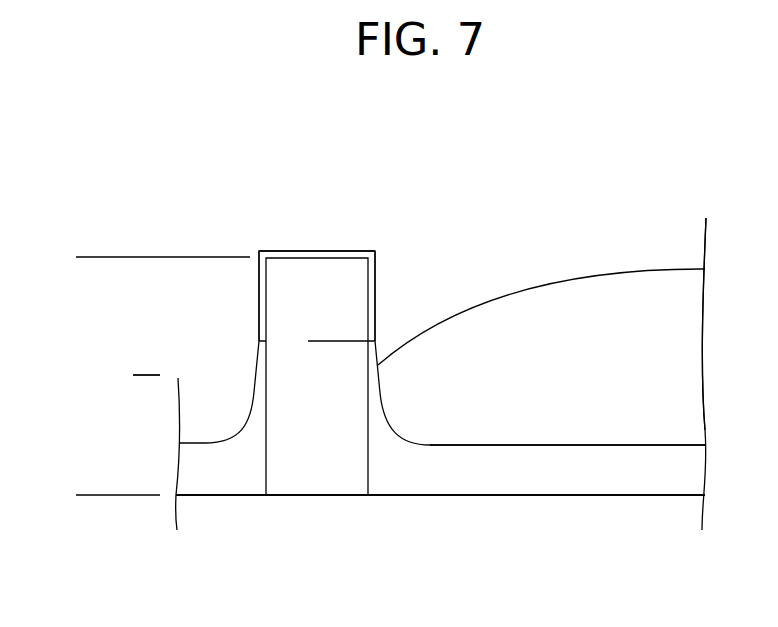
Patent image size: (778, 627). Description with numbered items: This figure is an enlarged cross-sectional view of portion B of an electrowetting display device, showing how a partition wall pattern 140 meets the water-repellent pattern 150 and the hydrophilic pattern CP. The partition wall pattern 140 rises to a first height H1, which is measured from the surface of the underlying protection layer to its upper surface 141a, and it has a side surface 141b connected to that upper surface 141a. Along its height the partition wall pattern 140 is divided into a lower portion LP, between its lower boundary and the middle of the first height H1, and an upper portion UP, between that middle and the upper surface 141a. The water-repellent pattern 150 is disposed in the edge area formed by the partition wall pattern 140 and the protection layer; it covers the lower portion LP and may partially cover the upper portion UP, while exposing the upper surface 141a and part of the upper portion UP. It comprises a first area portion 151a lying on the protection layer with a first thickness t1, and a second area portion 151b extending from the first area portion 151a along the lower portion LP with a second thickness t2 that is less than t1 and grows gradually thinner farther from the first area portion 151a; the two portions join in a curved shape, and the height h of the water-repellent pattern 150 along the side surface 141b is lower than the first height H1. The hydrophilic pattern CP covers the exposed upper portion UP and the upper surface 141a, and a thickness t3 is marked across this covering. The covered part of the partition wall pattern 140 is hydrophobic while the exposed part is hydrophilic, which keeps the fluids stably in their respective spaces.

The partition wall pattern 140 is at (288, 480).
The upper surface 141a is at (303, 250).
The side surface 141b is at (377, 283).
The hydrophilic pattern CP is at (372, 251).
The water-repellent pattern 150 is at (523, 562).
The first area portion 151a is at (495, 478).
The second area portion 151b is at (376, 410).
The portion B is at (621, 186).
The first height H1 is at (82, 257).
The upper portion UP is at (138, 257).
The lower portion LP is at (138, 375).
The height h is at (314, 341).
The first thickness t1 is at (592, 445).
The second thickness t2 is at (340, 393).
The thickness t3 is at (338, 285).